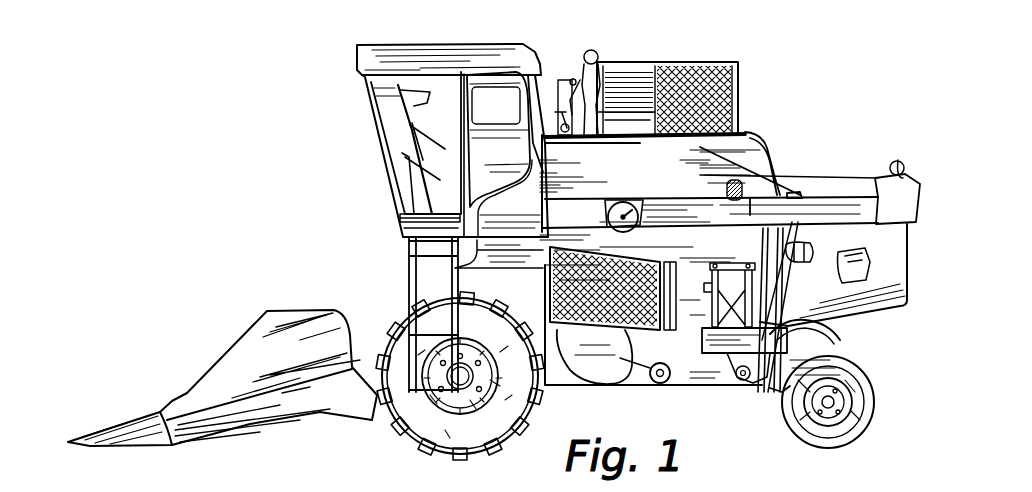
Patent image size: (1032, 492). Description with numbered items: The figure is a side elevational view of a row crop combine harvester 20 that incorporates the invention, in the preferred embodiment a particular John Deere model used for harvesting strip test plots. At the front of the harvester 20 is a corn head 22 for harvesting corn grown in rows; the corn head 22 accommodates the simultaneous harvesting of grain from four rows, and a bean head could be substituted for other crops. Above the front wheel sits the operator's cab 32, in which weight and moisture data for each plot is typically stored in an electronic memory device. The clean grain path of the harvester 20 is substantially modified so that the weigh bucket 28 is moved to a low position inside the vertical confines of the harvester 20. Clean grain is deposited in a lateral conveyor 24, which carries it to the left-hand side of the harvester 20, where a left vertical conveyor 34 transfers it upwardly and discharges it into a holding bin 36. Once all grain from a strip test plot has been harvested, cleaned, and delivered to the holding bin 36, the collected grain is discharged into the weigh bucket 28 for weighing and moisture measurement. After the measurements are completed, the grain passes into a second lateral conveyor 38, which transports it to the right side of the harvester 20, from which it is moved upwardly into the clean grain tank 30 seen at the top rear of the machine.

The row crop combine harvester 20 is at (278, 177).
The corn head 22 is at (135, 437).
The lateral conveyor 24 is at (664, 384).
The weigh bucket 28 is at (822, 330).
The clean grain tank 30 is at (696, 62).
The operator's cab 32 is at (437, 46).
The left vertical conveyor 34 is at (637, 372).
The holding bin 36 is at (766, 152).
The second lateral conveyor 38 is at (732, 392).